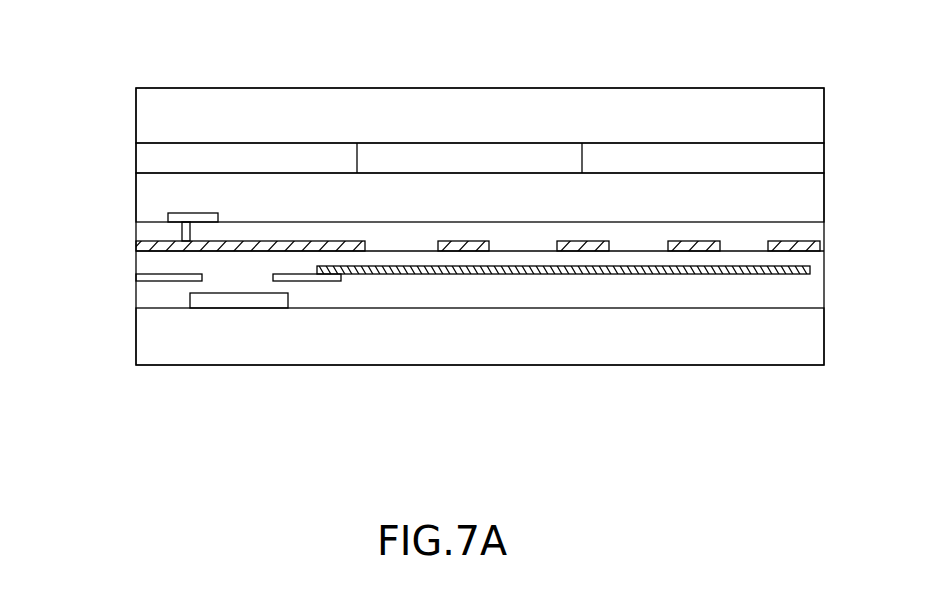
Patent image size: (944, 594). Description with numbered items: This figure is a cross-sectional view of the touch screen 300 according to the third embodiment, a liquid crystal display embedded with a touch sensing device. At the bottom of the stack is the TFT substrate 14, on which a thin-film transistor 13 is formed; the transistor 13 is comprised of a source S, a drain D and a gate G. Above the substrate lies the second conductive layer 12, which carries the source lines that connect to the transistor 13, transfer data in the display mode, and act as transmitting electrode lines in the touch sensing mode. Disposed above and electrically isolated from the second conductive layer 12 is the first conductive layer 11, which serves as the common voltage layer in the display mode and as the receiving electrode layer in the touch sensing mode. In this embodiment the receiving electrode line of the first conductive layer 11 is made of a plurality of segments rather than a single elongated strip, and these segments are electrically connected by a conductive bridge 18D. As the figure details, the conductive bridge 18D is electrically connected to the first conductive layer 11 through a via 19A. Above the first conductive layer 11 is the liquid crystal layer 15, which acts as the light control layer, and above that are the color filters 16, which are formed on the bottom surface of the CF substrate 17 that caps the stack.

The touch screen 300 is at (81, 35).
The CF substrate 17 is at (148, 117).
The color filters 16 is at (148, 162).
The liquid crystal layer 15 is at (148, 195).
The conductive bridge 18D is at (178, 214).
The via 19A is at (172, 243).
The first conductive layer 11 is at (800, 243).
The second conductive layer 12 is at (805, 271).
The TFT substrate 14 is at (150, 334).
The thin-film transistor 13 is at (238, 363).
The source S is at (158, 281).
The gate G is at (239, 349).
The drain D is at (297, 281).